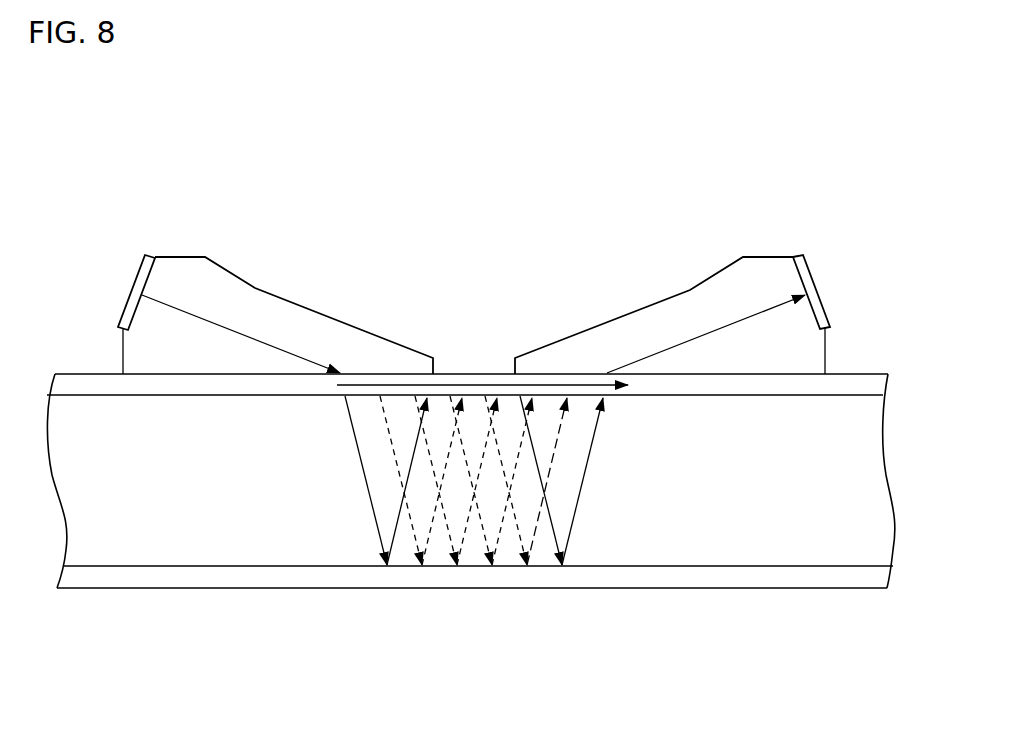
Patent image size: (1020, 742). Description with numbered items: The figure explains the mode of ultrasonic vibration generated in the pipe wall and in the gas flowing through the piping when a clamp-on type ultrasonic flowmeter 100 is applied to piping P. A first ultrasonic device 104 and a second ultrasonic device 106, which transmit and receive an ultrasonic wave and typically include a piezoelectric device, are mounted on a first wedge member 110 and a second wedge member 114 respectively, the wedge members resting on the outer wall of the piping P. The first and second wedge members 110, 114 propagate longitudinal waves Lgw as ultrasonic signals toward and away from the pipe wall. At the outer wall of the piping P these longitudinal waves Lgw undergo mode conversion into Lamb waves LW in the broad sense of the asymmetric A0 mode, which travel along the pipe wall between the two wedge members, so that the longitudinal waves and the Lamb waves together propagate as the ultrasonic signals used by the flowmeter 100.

The clamp-on type ultrasonic flowmeter 100 is at (802, 155).
The first ultrasonic device 104 is at (140, 263).
The second ultrasonic device 106 is at (810, 267).
The first wedge member 110 is at (240, 293).
The second wedge member 114 is at (677, 310).
The longitudinal waves Lgw is at (277, 345).
The Lamb waves LW is at (473, 387).
The piping P is at (817, 577).